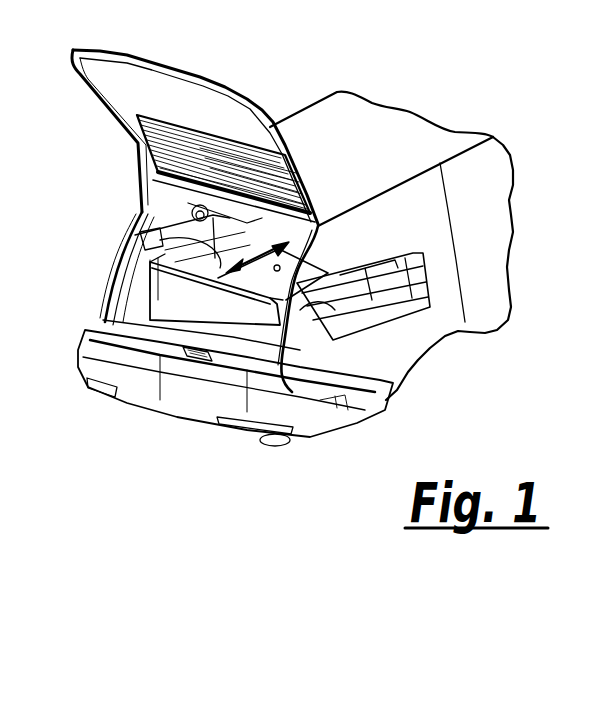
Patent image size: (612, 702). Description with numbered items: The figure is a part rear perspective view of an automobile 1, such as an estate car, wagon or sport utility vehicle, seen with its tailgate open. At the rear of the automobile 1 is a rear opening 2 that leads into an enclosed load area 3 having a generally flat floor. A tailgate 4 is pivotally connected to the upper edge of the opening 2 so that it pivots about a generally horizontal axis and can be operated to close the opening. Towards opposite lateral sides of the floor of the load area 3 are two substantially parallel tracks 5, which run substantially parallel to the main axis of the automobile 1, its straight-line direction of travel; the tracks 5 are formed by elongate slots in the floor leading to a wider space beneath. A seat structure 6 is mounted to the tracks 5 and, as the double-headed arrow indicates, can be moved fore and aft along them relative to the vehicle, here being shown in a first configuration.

The automobile 1 is at (392, 132).
The rear opening 2 is at (145, 208).
The load area 3 is at (272, 280).
The tailgate 4 is at (165, 70).
The tracks 5 is at (127, 328).
The seat structure 6 is at (157, 287).